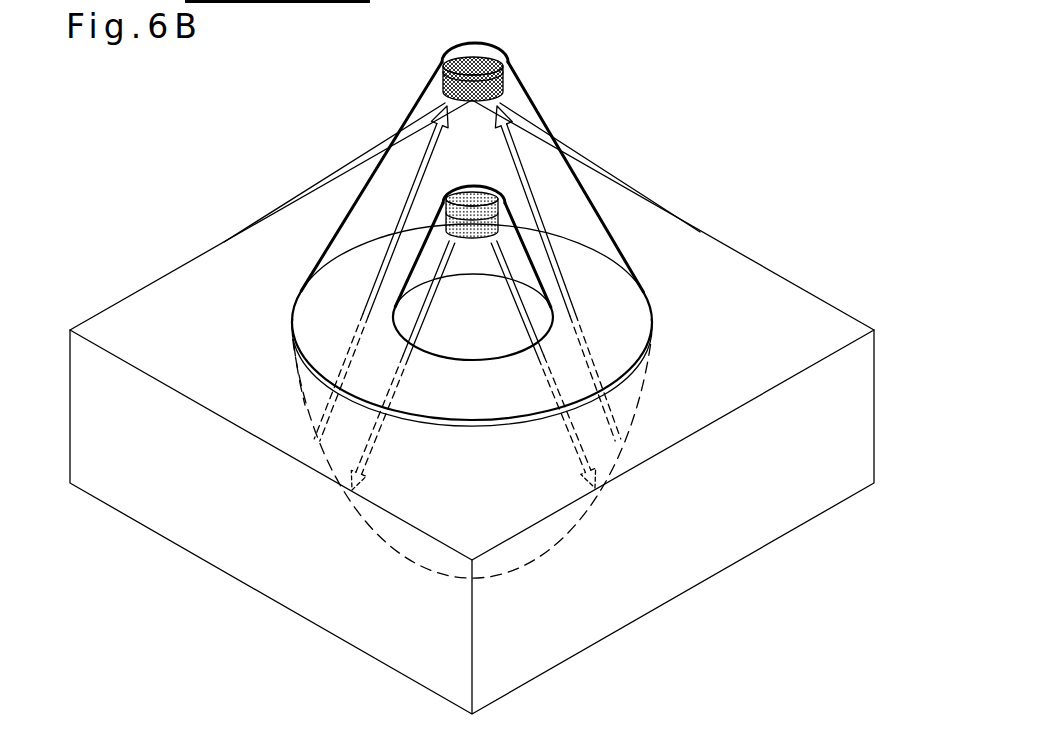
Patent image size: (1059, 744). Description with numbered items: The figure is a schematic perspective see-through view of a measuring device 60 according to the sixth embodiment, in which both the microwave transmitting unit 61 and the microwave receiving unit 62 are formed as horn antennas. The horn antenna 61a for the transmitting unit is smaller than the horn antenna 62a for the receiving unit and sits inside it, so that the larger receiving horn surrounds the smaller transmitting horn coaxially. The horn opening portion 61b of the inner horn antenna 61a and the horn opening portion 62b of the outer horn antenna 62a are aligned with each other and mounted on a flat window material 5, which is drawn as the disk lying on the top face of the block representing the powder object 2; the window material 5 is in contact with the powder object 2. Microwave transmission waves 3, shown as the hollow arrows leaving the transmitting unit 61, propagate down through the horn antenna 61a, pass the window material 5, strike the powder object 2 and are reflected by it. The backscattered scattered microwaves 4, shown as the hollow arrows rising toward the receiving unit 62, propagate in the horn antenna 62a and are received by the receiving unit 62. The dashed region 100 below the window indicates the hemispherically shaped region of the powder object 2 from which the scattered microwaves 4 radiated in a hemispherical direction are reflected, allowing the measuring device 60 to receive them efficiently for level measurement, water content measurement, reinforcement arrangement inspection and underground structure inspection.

The measuring device 60 is at (240, 131).
The powder object 2 is at (735, 272).
The region 100 is at (590, 517).
The microwave receiving unit 62 is at (503, 85).
The horn antenna for the receiving unit 62a is at (411, 110).
The horn opening portion 62b is at (353, 322).
The microwave transmitting unit 61 is at (478, 196).
The horn antenna for the transmitting unit 61a is at (415, 262).
The horn opening portion 61b is at (498, 311).
The scattered microwaves 4 is at (382, 280).
The microwave transmission waves 3 is at (402, 367).
The window material 5 is at (300, 396).